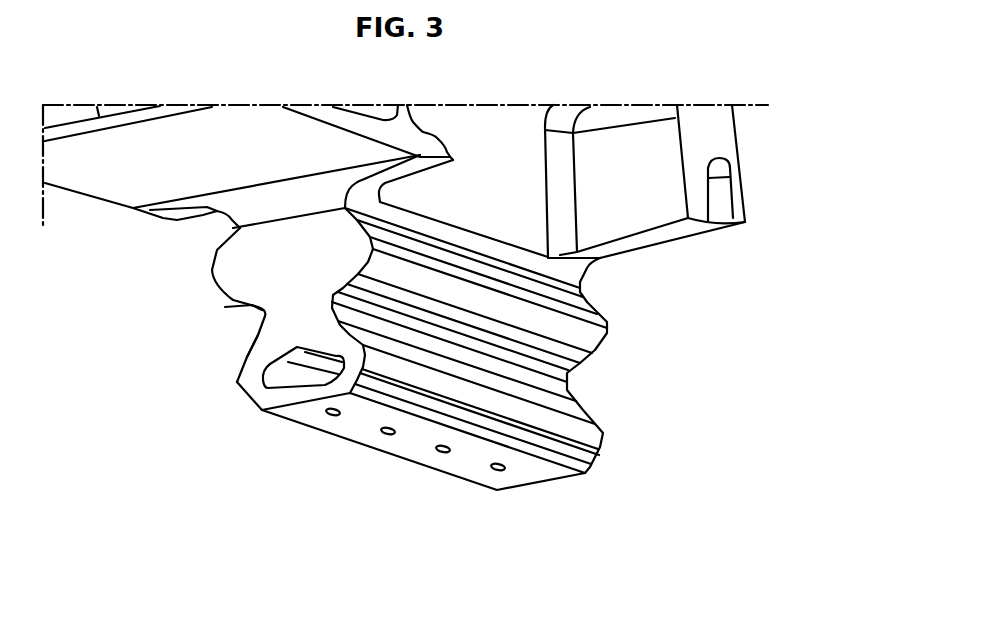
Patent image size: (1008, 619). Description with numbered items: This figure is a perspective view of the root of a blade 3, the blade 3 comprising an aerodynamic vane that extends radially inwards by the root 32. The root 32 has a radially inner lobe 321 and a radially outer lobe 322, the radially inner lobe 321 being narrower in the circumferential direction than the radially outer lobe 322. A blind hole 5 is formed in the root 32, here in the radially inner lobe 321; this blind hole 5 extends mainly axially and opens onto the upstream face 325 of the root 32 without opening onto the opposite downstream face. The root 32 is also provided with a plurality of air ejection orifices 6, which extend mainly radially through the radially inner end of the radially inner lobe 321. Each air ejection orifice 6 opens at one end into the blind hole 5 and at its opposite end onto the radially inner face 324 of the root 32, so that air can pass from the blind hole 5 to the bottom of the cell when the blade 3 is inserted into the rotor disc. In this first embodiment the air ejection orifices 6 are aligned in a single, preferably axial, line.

The blade 3 is at (657, 377).
The root 32 is at (207, 313).
The radially inner lobe 321 is at (258, 350).
The radially outer lobe 322 is at (306, 273).
The radially inner face 324 is at (463, 459).
The upstream face 325 is at (293, 317).
The blind hole 5 is at (294, 368).
The air ejection orifices 6 is at (388, 436).